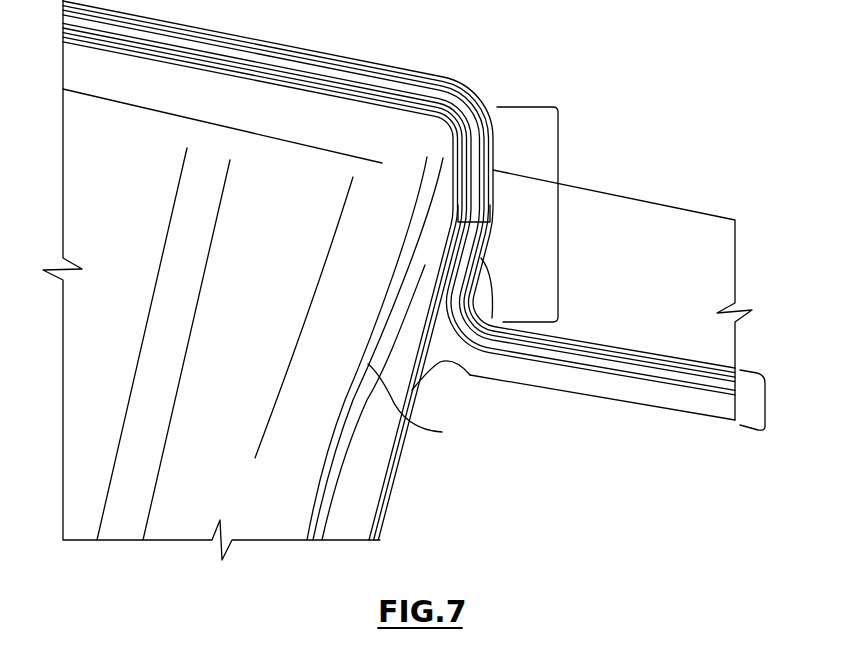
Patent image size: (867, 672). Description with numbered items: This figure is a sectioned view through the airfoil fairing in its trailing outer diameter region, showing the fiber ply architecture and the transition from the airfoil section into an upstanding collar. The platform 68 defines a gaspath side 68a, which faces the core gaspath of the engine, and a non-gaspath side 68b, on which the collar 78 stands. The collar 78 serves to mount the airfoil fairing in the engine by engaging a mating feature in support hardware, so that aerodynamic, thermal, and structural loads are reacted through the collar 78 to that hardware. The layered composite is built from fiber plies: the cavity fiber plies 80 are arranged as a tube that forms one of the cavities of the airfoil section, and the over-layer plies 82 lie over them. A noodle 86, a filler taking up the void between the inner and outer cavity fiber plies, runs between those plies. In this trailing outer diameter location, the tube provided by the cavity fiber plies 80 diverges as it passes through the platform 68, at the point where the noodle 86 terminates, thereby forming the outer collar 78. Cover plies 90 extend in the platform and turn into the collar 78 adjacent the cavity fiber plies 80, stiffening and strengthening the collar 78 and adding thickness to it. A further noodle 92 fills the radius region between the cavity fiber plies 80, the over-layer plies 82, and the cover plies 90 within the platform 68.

The platform 68 is at (765, 405).
The gaspath side 68a is at (683, 412).
The non-gaspath side 68b is at (698, 285).
The collar 78 is at (558, 218).
The cavity fiber plies 80 is at (420, 406).
The over-layer plies 82 is at (404, 446).
The noodle 86 is at (368, 495).
The cover plies 90 is at (472, 222).
The noodle 92 is at (446, 349).